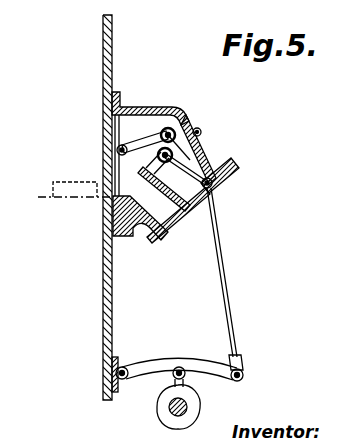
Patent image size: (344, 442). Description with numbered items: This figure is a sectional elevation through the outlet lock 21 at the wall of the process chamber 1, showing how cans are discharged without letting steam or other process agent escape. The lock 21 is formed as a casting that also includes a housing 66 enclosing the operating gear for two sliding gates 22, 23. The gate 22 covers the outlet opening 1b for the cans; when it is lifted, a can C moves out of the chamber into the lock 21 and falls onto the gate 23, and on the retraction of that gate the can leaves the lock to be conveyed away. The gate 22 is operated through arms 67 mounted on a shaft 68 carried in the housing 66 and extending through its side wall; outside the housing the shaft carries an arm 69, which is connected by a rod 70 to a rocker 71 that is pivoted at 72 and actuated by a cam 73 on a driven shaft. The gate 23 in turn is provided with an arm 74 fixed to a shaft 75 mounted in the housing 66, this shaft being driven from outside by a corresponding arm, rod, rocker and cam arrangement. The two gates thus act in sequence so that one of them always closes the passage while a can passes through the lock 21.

The process chamber 1 is at (112, 47).
The outlet opening 1b is at (107, 196).
The lock 21 is at (133, 106).
The sliding gate 22 is at (116, 152).
The sliding gate 23 is at (178, 216).
The housing 66 is at (165, 118).
The arms 67 is at (140, 142).
The shaft 68 is at (174, 128).
The arm 69 is at (201, 129).
The rod 70 is at (224, 268).
The rocker 71 is at (172, 358).
The pivot 72 is at (125, 366).
The cam 73 is at (196, 403).
The arm 74 is at (200, 160).
The shaft 75 is at (140, 210).
The can C is at (73, 192).